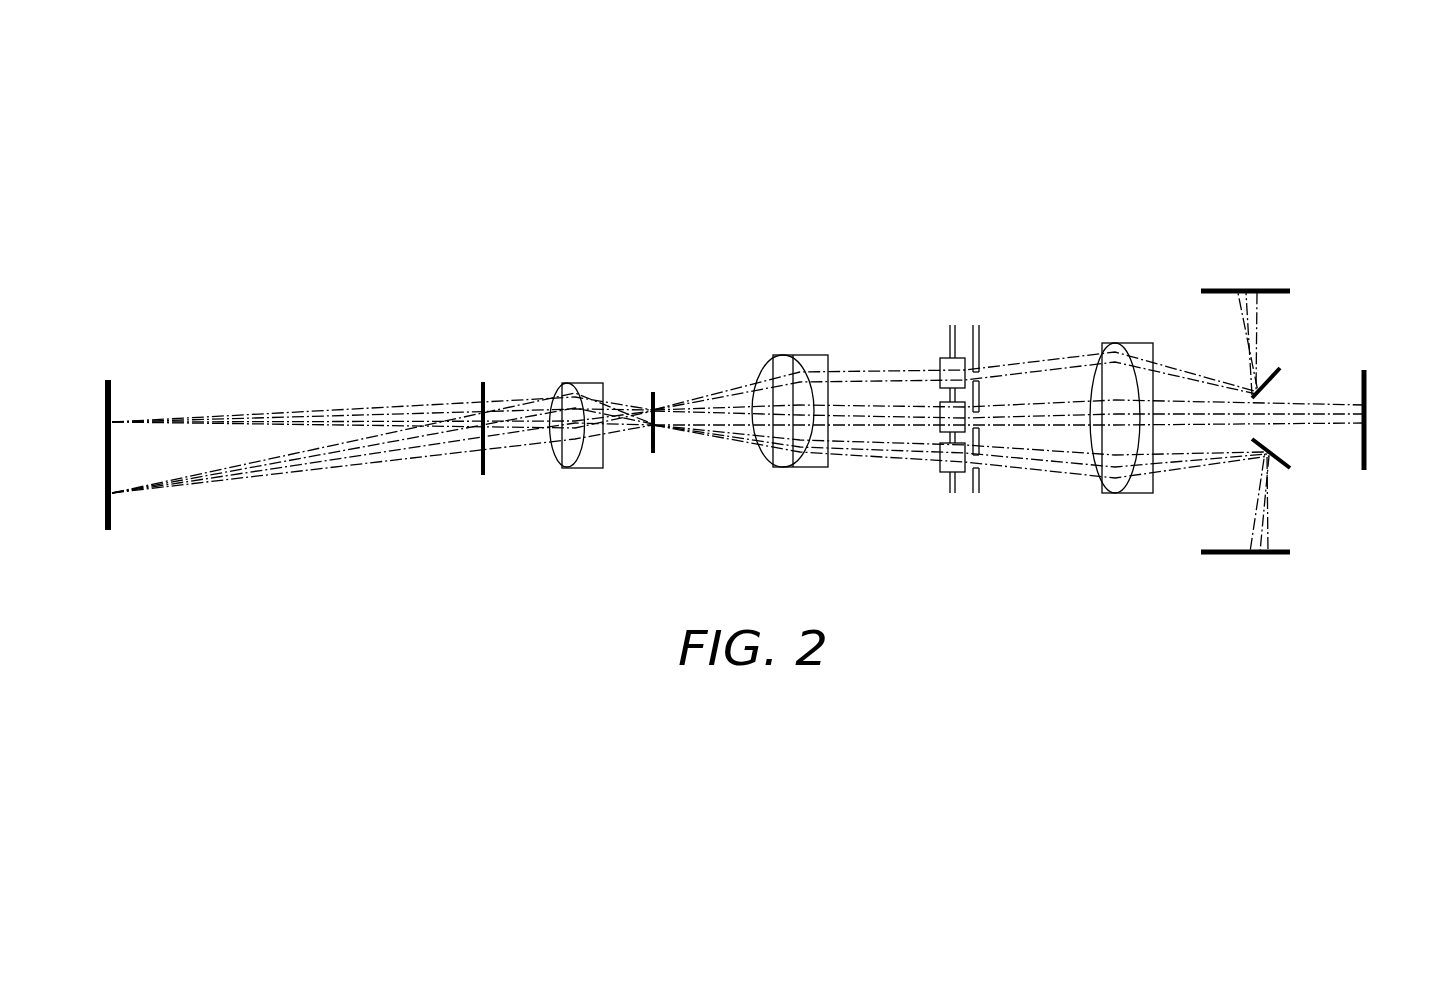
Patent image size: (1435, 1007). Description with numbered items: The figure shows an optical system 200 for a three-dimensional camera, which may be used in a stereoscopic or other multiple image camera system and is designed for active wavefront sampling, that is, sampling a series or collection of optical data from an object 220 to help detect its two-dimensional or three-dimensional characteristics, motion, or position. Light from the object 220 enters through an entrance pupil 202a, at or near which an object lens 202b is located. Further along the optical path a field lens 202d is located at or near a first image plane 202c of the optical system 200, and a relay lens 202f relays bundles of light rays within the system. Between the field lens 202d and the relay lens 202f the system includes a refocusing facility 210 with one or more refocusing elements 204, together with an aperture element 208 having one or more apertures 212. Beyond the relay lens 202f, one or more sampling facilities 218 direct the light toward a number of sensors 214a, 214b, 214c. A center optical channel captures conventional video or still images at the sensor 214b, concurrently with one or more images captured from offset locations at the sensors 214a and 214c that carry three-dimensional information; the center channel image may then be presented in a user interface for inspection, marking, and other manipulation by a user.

The optical system 200 is at (378, 292).
The object 220 is at (112, 508).
The entrance pupil 202a is at (476, 462).
The object lens 202b is at (562, 465).
The first image plane 202c is at (656, 447).
The field lens 202d is at (785, 468).
The refocusing element 204 is at (938, 365).
The aperture element 208 is at (982, 478).
The refocusing facility 210 is at (953, 495).
The aperture 212 is at (977, 375).
The relay lens 202f is at (1130, 495).
The sensor 214a is at (1255, 292).
The sensor 214b is at (1366, 377).
The sensor 214c is at (1250, 555).
The sampling facility 218 is at (1280, 378).